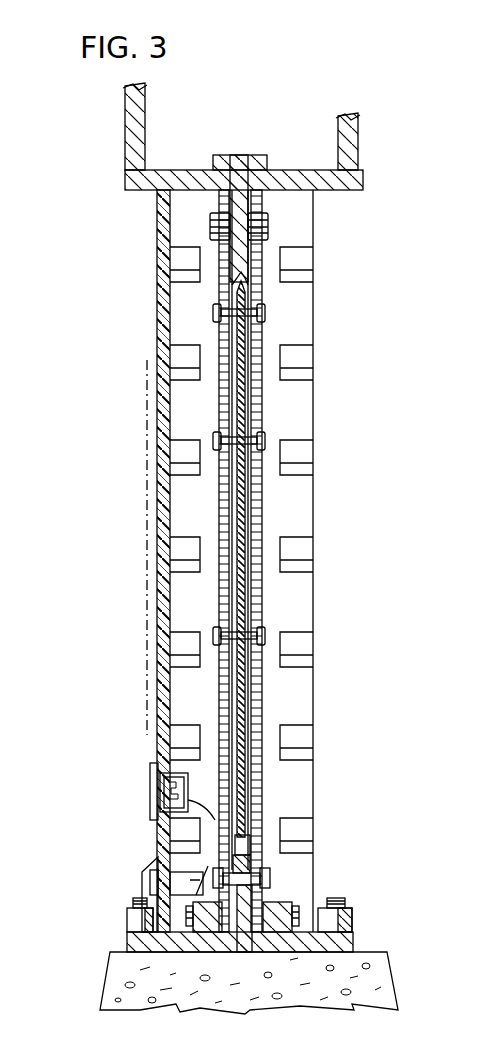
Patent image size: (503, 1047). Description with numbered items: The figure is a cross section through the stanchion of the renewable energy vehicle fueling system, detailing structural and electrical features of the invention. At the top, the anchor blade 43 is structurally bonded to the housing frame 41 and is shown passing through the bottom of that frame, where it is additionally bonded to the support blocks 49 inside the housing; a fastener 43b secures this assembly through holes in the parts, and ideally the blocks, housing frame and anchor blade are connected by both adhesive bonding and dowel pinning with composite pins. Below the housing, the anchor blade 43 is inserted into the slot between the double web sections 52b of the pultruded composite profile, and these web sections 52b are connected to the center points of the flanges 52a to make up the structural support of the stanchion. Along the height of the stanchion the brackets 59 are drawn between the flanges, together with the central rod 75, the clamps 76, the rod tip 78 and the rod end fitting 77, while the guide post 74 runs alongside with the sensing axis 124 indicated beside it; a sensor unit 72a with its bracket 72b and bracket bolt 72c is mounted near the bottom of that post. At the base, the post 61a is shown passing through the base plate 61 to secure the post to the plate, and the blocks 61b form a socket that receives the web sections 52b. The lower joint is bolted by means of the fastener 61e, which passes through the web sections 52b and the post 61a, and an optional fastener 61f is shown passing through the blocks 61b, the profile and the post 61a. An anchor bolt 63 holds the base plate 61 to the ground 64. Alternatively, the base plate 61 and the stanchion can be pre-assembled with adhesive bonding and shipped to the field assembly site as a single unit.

The housing frame 41 is at (345, 157).
The anchor blade 43 is at (243, 160).
The fastener 43b is at (268, 227).
The support blocks 49 is at (214, 156).
The flanges 52a is at (298, 306).
The web sections 52b is at (257, 712).
The brackets 59 is at (303, 363).
The base plate 61 is at (355, 942).
The post 61a is at (245, 948).
The blocks 61b is at (272, 903).
The fastener 61e is at (267, 870).
The optional fastener 61f is at (303, 905).
The anchor bolt 63 is at (345, 903).
The ground 64 is at (365, 982).
The sensor unit 72a is at (150, 768).
The sensor bracket 72b is at (150, 877).
The bracket bolt 72c is at (145, 887).
The guide post 74 is at (163, 337).
The inner rod 75 is at (241, 523).
The clamps 76 is at (270, 630).
The rod end fitting 77 is at (247, 840).
The rod tip 78 is at (236, 277).
The sensing axis 124 is at (150, 497).